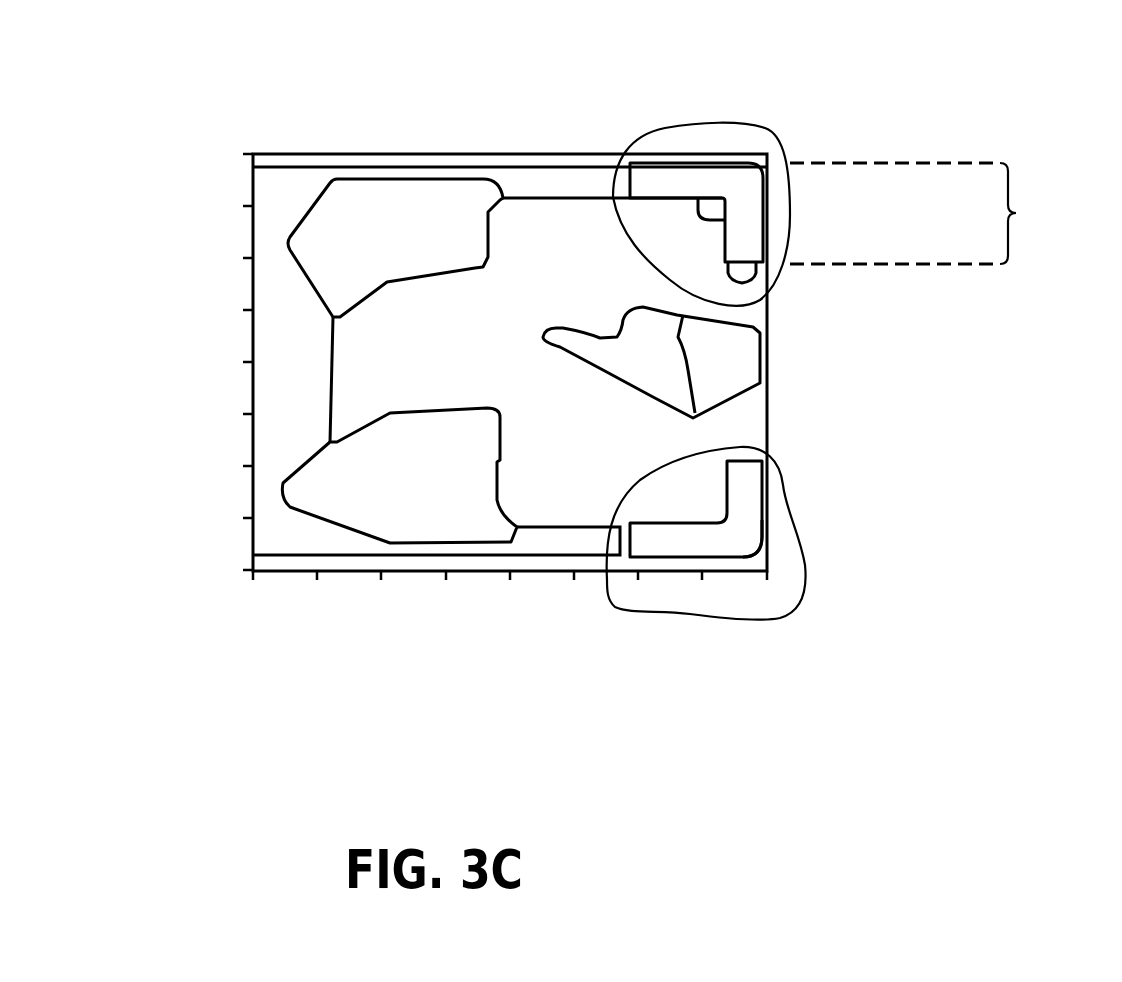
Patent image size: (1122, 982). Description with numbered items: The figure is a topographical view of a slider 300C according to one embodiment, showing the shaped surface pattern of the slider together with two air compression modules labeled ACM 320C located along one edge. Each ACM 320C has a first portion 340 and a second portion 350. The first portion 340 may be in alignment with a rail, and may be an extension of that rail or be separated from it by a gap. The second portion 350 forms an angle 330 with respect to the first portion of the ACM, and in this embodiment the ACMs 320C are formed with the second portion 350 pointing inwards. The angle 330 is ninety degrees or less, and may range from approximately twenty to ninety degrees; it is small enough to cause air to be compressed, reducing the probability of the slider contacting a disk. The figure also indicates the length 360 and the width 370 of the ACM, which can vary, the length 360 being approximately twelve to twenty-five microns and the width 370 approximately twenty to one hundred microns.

The slider 300C is at (744, 103).
The ACM 320C is at (762, 213).
The angle 330 is at (699, 220).
The width 370 is at (742, 283).
The first portion 340 is at (680, 558).
The second portion 350 is at (757, 540).
The length 360 is at (1027, 213).